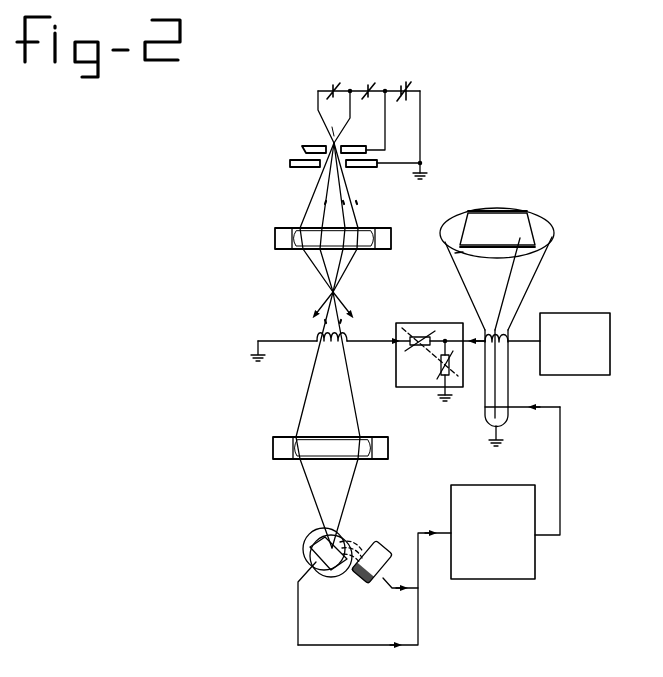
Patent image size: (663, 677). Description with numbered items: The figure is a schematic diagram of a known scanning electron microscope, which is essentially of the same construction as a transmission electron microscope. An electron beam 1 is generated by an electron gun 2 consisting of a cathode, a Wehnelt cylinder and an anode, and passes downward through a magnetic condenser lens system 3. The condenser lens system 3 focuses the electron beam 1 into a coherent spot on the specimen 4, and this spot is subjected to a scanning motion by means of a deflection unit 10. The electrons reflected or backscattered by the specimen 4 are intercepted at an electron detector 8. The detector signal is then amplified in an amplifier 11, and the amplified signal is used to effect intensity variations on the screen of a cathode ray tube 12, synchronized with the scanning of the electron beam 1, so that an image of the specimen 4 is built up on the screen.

The electron beam 1 is at (309, 206).
The electron gun 2 is at (258, 97).
The condenser lens system 3 is at (276, 240).
The specimen 4 is at (310, 552).
The electron detector 8 is at (370, 558).
The deflection unit 10 is at (318, 338).
The amplifier 11 is at (525, 566).
The cathode ray tube 12 is at (540, 226).